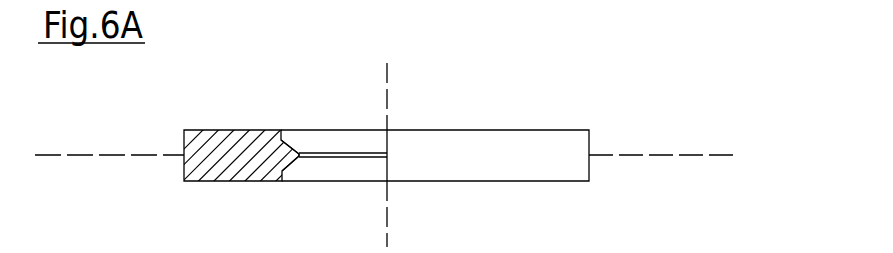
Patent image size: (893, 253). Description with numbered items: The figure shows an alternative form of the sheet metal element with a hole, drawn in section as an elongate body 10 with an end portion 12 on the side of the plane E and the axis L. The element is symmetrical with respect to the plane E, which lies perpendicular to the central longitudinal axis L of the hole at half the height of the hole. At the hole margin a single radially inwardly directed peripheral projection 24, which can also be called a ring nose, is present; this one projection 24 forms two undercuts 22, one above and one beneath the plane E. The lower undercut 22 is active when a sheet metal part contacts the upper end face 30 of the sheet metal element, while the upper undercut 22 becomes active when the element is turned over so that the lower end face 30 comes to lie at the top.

The elongate body 10 is at (553, 143).
The end portion 12 is at (365, 142).
The undercut 22 is at (295, 130).
The projection 24 is at (299, 152).
The end face 30 is at (197, 137).
The central longitudinal axis L is at (388, 213).
The plane E is at (399, 156).